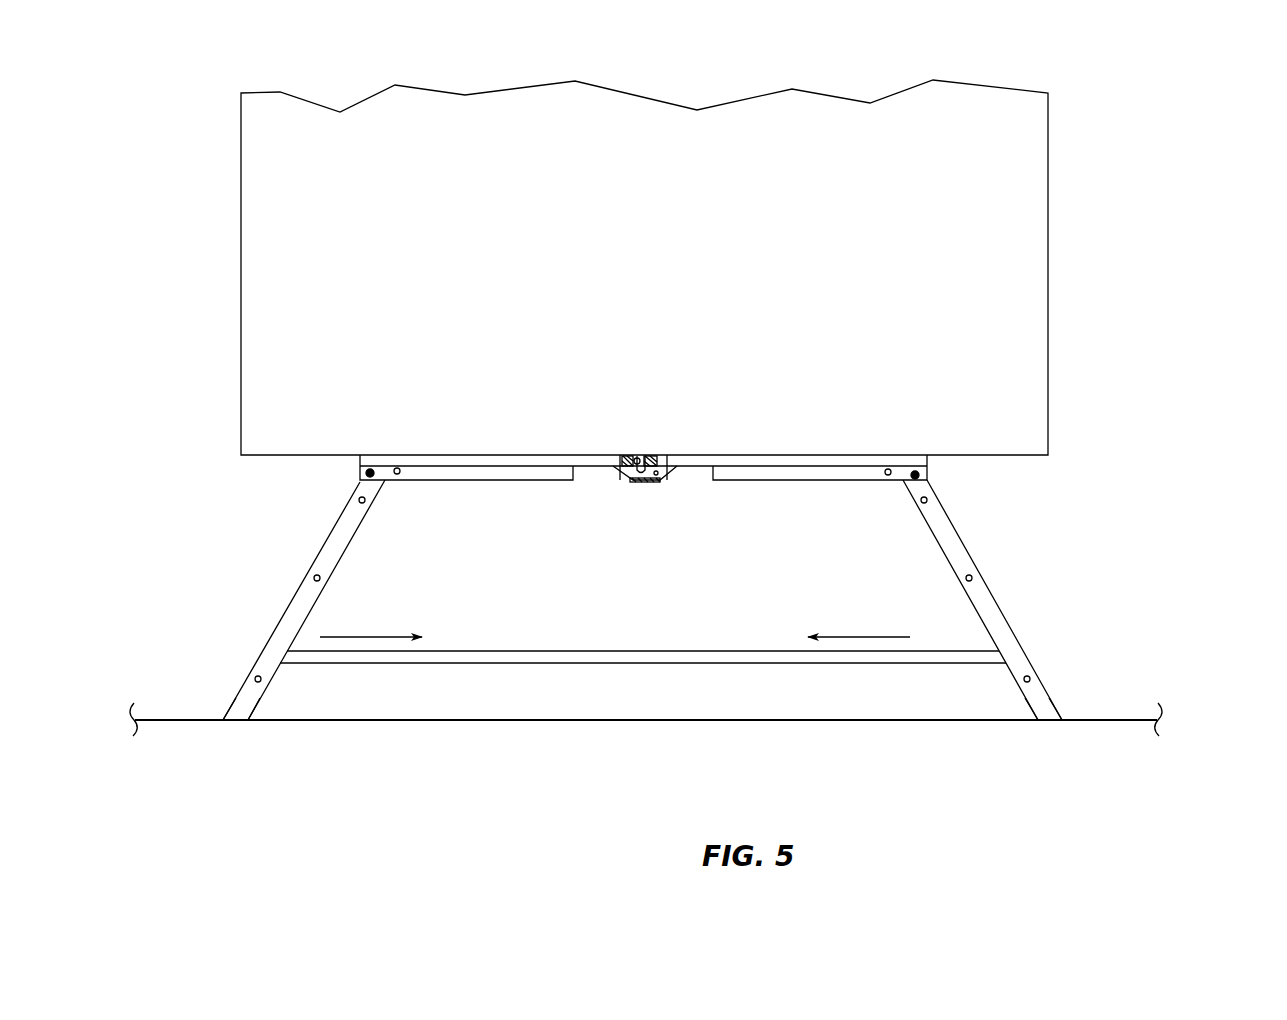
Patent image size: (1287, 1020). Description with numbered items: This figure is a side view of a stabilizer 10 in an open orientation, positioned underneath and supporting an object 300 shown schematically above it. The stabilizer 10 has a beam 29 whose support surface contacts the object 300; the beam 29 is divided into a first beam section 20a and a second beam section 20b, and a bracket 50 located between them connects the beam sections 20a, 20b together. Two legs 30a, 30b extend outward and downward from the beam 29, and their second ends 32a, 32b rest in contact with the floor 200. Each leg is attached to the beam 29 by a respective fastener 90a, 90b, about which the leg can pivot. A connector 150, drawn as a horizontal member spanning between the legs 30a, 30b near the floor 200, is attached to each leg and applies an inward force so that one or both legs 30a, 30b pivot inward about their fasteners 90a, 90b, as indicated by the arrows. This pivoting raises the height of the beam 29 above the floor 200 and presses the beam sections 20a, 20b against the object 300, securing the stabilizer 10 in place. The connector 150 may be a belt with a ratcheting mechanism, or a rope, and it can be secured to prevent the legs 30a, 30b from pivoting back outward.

The stabilizer 10 is at (1148, 505).
The first beam section 20a is at (500, 463).
The second beam section 20b is at (790, 463).
The beam 29 is at (340, 470).
The leg 30a is at (293, 603).
The leg 30b is at (987, 602).
The second end 32a is at (240, 710).
The second end 32b is at (1040, 710).
The bracket 50 is at (643, 483).
The fastener 90a is at (365, 476).
The fastener 90b is at (925, 477).
The connector 150 is at (480, 655).
The floor 200 is at (681, 764).
The object 300 is at (696, 289).